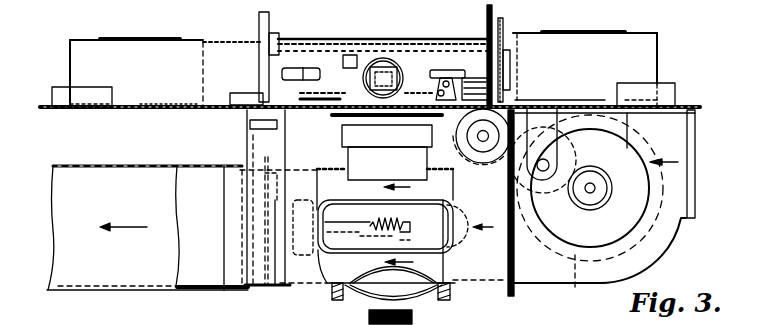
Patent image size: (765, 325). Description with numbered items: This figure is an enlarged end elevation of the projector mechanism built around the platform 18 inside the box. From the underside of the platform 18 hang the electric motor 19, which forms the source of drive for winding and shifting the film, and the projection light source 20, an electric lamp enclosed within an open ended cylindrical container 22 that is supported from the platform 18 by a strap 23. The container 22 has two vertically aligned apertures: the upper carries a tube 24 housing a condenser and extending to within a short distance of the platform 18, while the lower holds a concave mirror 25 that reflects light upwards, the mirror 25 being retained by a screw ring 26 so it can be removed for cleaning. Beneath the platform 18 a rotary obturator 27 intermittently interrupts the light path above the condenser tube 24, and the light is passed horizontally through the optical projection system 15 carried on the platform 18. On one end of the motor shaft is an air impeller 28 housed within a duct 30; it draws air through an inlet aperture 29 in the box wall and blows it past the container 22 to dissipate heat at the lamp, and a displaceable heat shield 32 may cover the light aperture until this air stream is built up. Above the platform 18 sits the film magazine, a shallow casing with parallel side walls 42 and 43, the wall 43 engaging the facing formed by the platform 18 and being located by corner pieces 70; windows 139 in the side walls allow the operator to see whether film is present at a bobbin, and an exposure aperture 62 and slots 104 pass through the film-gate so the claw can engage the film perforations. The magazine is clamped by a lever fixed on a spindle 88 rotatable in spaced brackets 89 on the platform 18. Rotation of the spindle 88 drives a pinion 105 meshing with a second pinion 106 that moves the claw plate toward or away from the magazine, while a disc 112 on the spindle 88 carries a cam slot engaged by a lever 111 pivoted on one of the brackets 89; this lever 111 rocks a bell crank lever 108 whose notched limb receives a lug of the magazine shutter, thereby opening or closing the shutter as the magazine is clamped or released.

The optical projection system 15 is at (401, 72).
The platform 18 is at (131, 110).
The electric motor 19 is at (615, 228).
The projection light source 20 is at (309, 280).
The cylindrical container 22 is at (472, 273).
The strap 23 is at (256, 283).
The tube 24 is at (348, 156).
The concave mirror 25 is at (363, 300).
The screw ring 26 is at (446, 300).
The rotary obturator 27 is at (322, 122).
The air impeller 28 is at (586, 280).
The inlet aperture 29 is at (688, 200).
The duct 30 is at (150, 283).
The displaceable heat shield 32 is at (387, 131).
The side wall 42 is at (232, 40).
The side wall 43 is at (177, 105).
The exposure aperture 62 is at (349, 55).
The corner pieces 70 is at (60, 87).
The spindle 88 is at (305, 39).
The brackets 89 is at (535, 100).
The slots 104 is at (418, 50).
The pinion 105 is at (490, 15).
The second pinion 106 is at (459, 76).
The bell crank lever 108 is at (449, 90).
The lever 111 is at (511, 74).
The disc 112 is at (508, 15).
The windows 139 is at (151, 39).